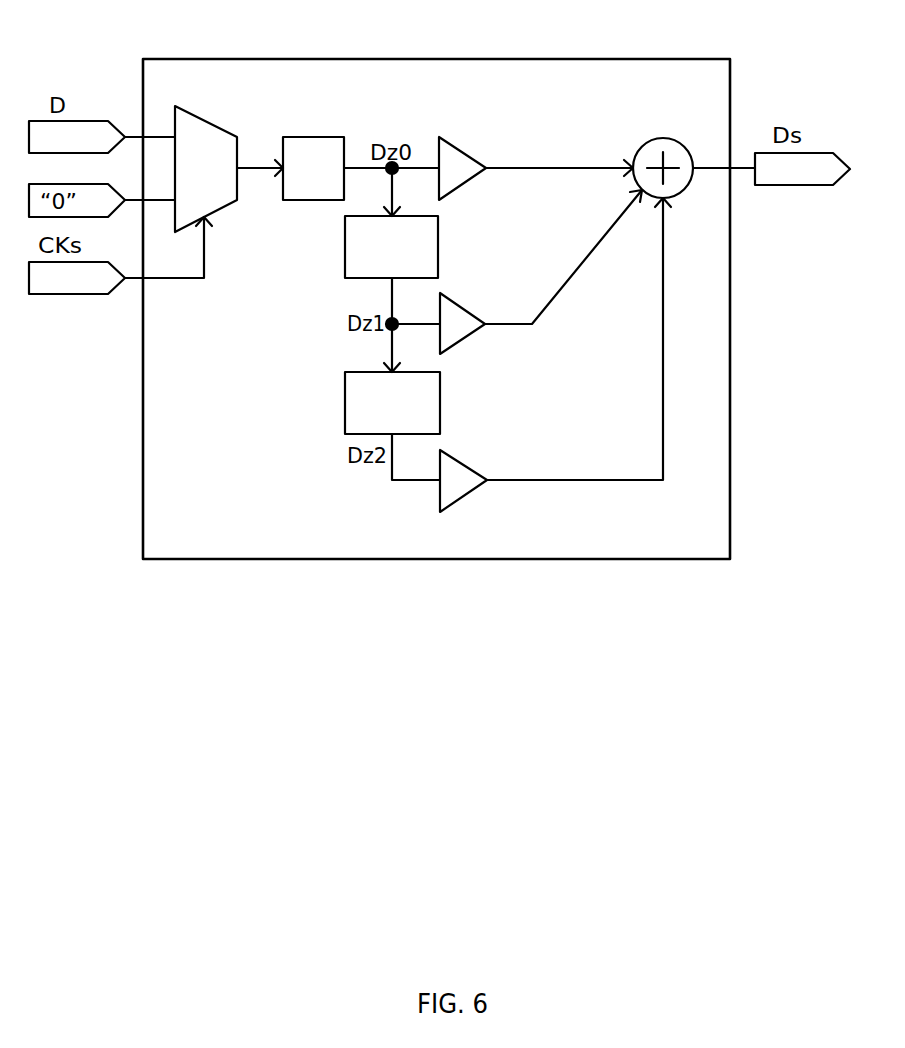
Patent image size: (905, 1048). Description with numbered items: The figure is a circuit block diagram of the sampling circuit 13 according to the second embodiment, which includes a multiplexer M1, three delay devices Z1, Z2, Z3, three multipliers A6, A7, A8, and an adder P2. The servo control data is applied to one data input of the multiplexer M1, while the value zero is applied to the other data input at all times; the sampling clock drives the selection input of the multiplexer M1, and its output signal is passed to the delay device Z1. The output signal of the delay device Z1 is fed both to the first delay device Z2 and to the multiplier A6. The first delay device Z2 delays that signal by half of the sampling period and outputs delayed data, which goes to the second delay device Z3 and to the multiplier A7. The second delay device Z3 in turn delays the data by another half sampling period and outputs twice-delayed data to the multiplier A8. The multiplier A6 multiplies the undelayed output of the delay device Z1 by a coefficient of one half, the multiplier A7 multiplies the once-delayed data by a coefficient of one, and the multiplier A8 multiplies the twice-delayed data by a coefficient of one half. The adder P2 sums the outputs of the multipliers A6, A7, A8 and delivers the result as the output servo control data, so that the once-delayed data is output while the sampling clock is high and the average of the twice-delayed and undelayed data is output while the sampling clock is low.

The sampling circuit 13 is at (447, 59).
The multiplexer M1 is at (175, 107).
The delay device Z1 is at (313, 137).
The first delay device Z2 is at (439, 245).
The second delay device Z3 is at (442, 400).
The multiplier A6 is at (442, 137).
The multiplier A7 is at (442, 293).
The multiplier A8 is at (442, 450).
The adder P2 is at (665, 137).